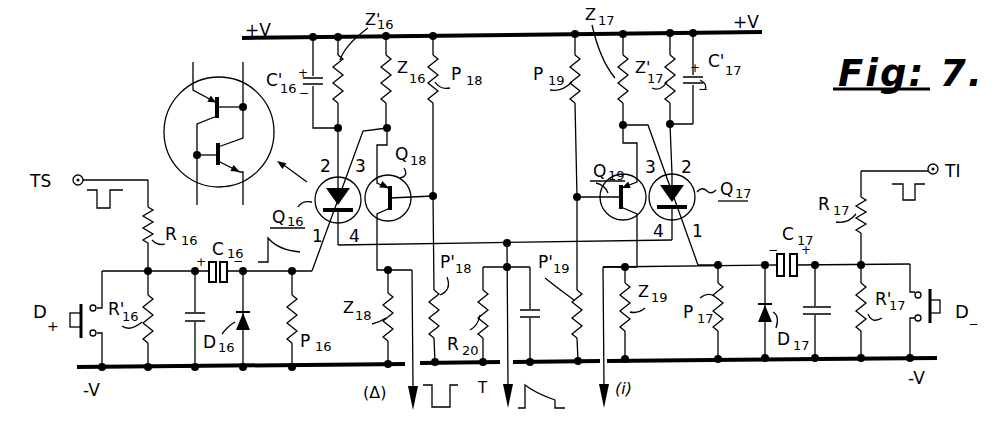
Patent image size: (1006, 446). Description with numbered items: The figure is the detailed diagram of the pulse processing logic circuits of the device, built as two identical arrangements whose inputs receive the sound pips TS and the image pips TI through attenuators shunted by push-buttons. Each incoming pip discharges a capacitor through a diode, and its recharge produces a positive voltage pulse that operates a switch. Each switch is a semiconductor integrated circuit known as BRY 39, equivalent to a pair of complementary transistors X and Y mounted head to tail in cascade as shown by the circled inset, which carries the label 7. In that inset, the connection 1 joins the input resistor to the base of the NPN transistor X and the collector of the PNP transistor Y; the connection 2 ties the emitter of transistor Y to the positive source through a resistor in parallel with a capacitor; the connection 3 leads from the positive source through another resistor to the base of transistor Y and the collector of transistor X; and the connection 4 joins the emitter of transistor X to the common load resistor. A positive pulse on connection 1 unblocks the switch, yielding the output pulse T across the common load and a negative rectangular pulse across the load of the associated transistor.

The BRY 39 thyristor tetrode equivalent circuit 7 is at (133, 81).
The BRY 39 programmable unijunction transistor 39 is at (164, 123).
The connection 1 is at (188, 182).
The connection 2 is at (198, 80).
The connection 3 is at (239, 102).
The connection 4 is at (239, 185).